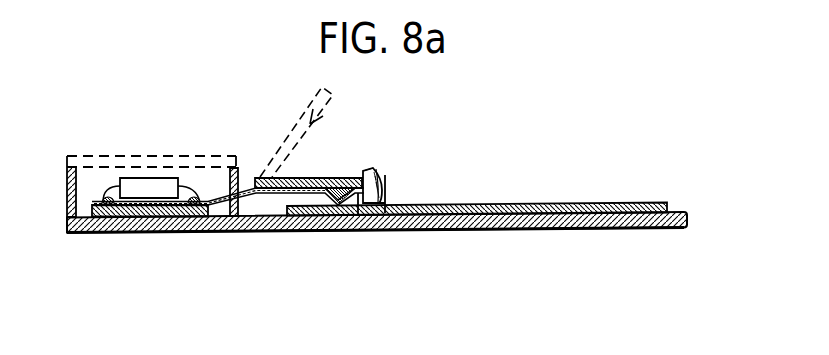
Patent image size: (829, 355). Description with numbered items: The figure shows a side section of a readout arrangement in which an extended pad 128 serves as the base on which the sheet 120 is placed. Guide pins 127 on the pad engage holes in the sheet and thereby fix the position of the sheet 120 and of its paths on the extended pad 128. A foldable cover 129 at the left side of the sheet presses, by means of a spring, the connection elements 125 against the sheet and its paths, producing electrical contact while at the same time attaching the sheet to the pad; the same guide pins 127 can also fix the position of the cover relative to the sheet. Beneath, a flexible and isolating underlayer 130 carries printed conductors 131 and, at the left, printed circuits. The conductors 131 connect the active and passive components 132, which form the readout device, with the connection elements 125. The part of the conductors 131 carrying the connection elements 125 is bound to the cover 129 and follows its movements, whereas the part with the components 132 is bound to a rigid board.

The sheet 120 is at (513, 205).
The connection elements 125 is at (370, 198).
The guide pins 127 is at (378, 168).
The extended pad 128 is at (412, 222).
The foldable cover 129 is at (326, 179).
The flexible and isolating underlayer 130 is at (102, 208).
The printed conductors 131 is at (256, 193).
The active and passive components 132 is at (150, 188).